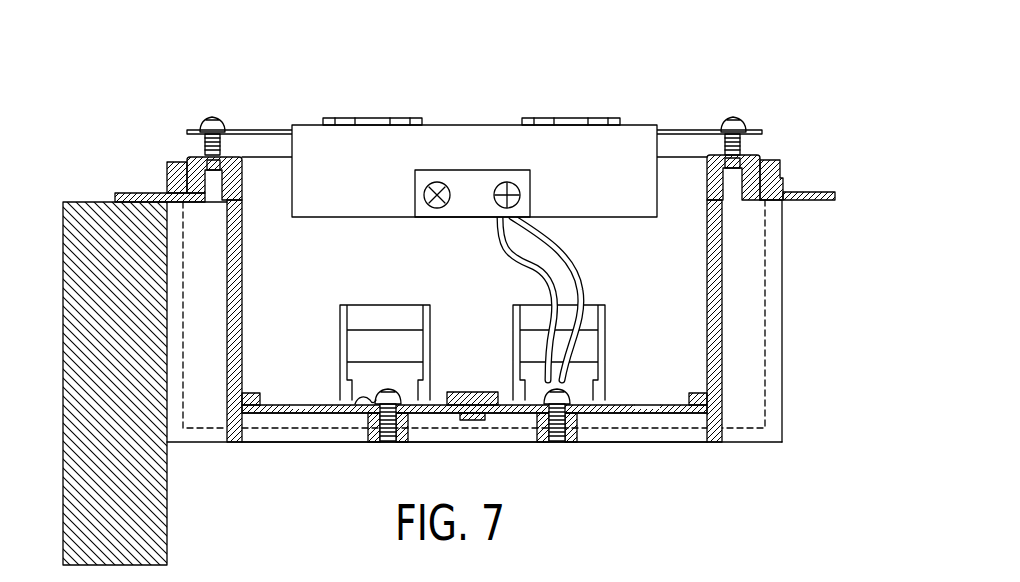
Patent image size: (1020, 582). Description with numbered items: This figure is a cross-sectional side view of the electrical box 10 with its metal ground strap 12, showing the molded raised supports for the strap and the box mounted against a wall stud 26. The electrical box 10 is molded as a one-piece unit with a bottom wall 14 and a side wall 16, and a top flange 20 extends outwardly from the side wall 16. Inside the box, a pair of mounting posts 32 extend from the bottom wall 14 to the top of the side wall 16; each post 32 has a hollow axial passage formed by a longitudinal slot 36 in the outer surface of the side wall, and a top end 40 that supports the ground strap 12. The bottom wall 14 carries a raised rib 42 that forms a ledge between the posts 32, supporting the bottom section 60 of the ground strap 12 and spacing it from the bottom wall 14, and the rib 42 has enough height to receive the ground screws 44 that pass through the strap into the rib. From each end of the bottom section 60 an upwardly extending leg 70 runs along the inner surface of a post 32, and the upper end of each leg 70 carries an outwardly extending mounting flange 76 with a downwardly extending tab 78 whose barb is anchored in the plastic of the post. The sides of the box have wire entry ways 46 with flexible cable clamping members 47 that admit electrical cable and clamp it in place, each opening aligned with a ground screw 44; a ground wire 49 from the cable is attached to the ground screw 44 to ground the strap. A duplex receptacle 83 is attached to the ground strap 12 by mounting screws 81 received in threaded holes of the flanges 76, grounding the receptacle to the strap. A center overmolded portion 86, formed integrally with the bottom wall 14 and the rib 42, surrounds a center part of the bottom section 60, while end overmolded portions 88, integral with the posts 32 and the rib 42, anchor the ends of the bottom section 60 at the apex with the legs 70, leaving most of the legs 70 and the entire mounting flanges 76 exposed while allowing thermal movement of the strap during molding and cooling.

The electrical box 10 is at (748, 450).
The metal ground strap 12 is at (252, 262).
The bottom wall 14 is at (510, 445).
The side wall 16 is at (775, 355).
The top flange 20 is at (816, 192).
The wall stud 26 is at (65, 242).
The mounting post 32 is at (722, 294).
The longitudinal slot 36 is at (200, 336).
The top end 40 is at (175, 162).
The raised rib 42 is at (290, 425).
The ground screw 44 is at (365, 415).
The wire entry way 46 is at (385, 315).
The cable clamping member 47 is at (580, 256).
The ground wire 49 is at (548, 388).
The bottom section 60 is at (625, 405).
The leg 70 is at (243, 292).
The mounting flange 76 is at (205, 157).
The downwardly extending tab 78 is at (187, 178).
The mounting screw 81 is at (220, 117).
The duplex receptacle 83 is at (456, 125).
The center overmolded portion 86 is at (470, 392).
The end overmolded portion 88 is at (250, 393).